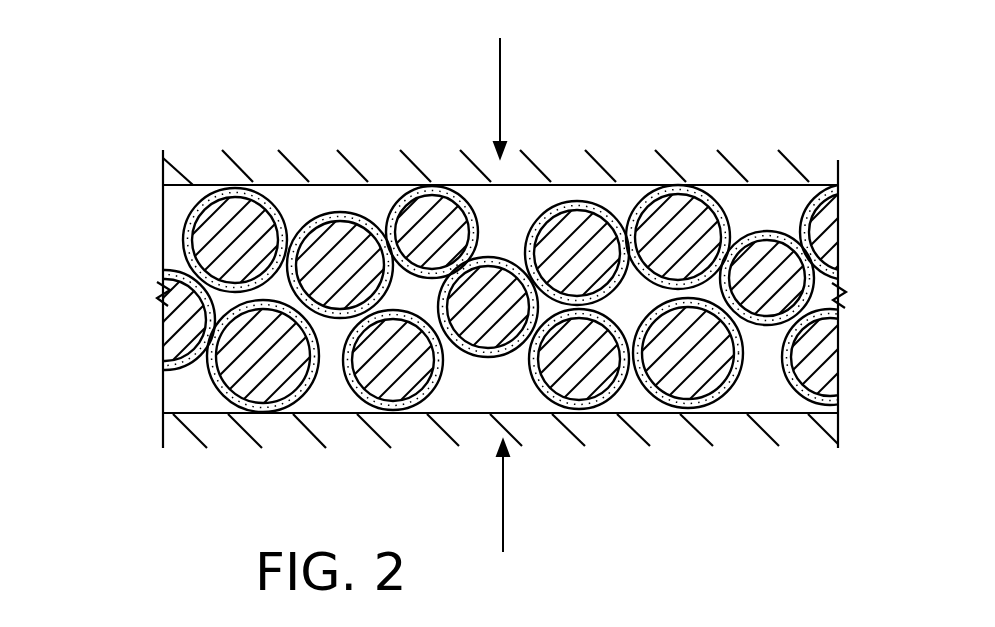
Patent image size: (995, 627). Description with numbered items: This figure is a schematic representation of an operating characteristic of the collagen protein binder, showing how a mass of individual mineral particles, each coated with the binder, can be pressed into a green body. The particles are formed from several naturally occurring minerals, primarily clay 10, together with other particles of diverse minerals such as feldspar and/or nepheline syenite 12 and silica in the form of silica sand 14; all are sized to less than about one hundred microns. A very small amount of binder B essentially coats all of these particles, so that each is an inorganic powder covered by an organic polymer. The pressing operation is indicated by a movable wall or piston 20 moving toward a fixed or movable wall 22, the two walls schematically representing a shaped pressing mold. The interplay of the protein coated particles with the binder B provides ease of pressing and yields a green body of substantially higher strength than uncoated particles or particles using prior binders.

The clay 10 is at (492, 297).
The feldspar and/or nepheline syenite 12 is at (380, 373).
The silica sand 14 is at (345, 257).
The movable wall or piston 20 is at (208, 173).
The fixed or movable wall 22 is at (207, 422).
The binder B is at (258, 192).